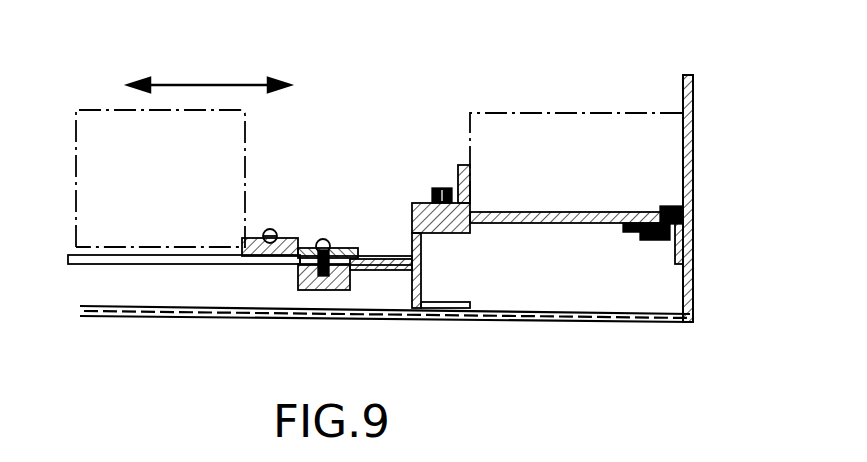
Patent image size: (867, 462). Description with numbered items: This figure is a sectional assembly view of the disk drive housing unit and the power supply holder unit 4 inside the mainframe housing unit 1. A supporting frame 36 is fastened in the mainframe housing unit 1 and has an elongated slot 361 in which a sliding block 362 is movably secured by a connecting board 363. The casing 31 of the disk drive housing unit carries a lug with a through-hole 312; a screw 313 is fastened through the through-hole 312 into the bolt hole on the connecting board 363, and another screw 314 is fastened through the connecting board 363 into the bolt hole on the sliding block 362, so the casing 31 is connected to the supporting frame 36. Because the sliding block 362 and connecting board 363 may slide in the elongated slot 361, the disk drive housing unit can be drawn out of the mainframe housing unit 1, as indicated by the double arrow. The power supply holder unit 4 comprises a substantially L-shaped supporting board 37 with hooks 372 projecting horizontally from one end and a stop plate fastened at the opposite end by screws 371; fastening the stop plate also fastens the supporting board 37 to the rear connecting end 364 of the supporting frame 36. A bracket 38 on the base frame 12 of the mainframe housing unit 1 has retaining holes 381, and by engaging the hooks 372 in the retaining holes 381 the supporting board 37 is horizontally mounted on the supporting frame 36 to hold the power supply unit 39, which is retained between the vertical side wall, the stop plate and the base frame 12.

The mainframe housing unit 1 is at (583, 322).
The power supply holder unit 4 is at (458, 148).
The base frame 12 is at (694, 153).
The casing 31 is at (237, 127).
The through-hole 312 is at (250, 240).
The screw 313 is at (273, 230).
The screw 314 is at (337, 248).
The supporting frame 36 is at (391, 262).
The elongated slot 361 is at (375, 268).
The sliding block 362 is at (327, 291).
The connecting board 363 is at (290, 262).
The rear connecting end 364 is at (423, 232).
The L-shaped supporting board 37 is at (571, 212).
The screw 371 is at (440, 188).
The hook 372 is at (663, 242).
The bracket 38 is at (668, 208).
The retaining hole 381 is at (637, 235).
The power supply unit 39 is at (575, 123).